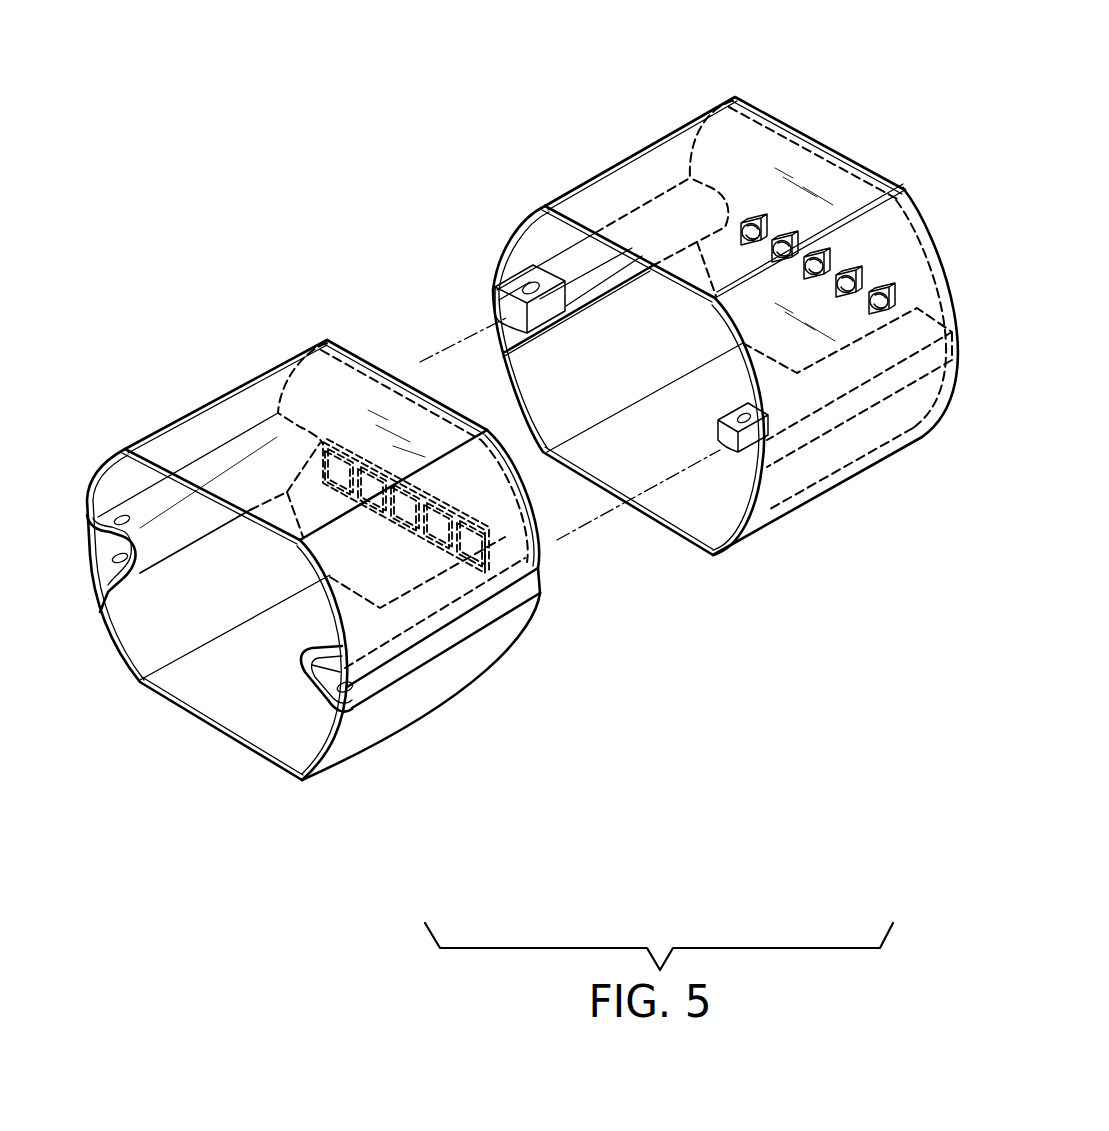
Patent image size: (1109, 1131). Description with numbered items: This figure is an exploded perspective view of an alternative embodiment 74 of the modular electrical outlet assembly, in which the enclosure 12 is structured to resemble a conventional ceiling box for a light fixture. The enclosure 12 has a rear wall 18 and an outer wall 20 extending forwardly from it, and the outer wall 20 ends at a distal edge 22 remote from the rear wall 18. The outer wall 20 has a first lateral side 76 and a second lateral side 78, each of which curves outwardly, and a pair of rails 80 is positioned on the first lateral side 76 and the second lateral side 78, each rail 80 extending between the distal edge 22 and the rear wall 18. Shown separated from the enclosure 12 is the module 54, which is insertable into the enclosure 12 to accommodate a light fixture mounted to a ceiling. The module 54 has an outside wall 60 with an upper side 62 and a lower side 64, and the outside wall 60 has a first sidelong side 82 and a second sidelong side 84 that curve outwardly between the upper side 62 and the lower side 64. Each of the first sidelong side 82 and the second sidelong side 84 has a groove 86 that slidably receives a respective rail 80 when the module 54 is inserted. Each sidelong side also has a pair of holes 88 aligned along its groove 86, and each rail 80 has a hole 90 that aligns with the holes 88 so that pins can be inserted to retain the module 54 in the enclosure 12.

The enclosure 12 is at (736, 95).
The rear wall 18 is at (903, 187).
The outer wall 20 is at (640, 170).
The distal edge 22 is at (638, 510).
The module 54 is at (318, 343).
The outside wall 60 is at (223, 413).
The upper side 62 is at (171, 419).
The lower side 64 is at (232, 742).
The alternative embodiment 74 is at (527, 116).
The first lateral side 76 is at (492, 298).
The second lateral side 78 is at (840, 453).
The rail 80 is at (530, 288).
The first sidelong side 82 is at (100, 500).
The second sidelong side 84 is at (400, 697).
The groove 86 is at (107, 546).
The hole 88 is at (116, 519).
The hole 90 is at (516, 300).